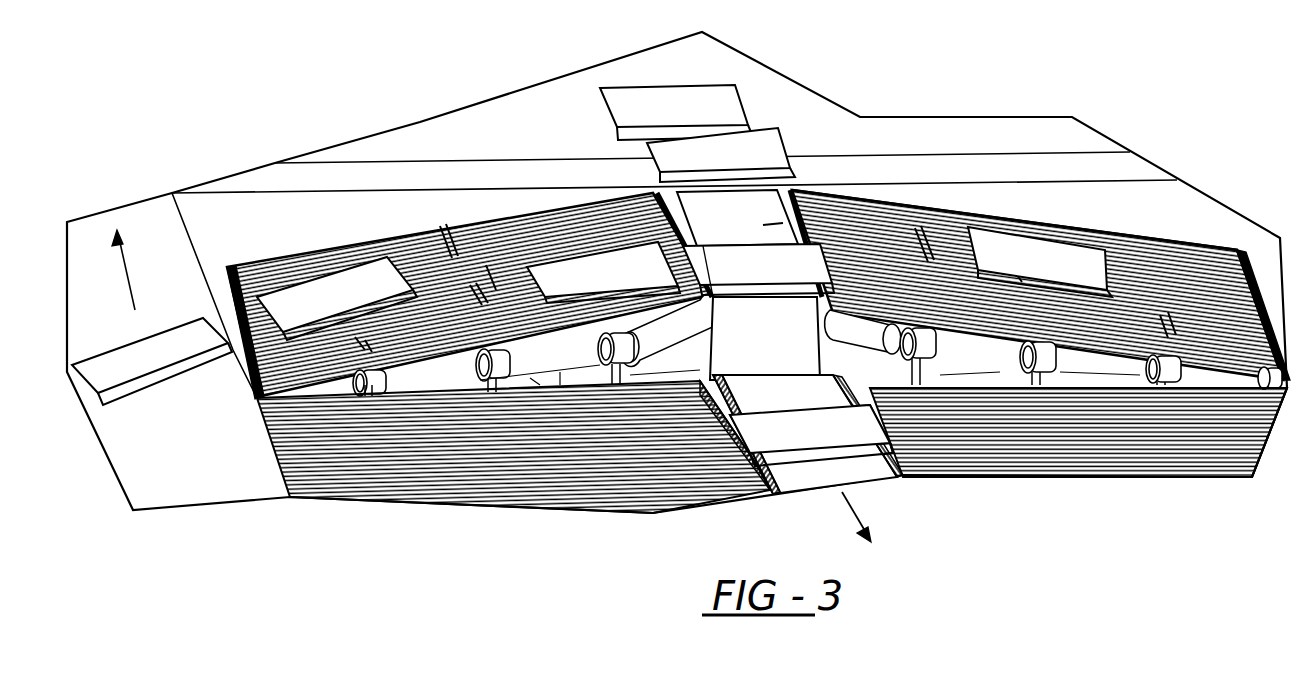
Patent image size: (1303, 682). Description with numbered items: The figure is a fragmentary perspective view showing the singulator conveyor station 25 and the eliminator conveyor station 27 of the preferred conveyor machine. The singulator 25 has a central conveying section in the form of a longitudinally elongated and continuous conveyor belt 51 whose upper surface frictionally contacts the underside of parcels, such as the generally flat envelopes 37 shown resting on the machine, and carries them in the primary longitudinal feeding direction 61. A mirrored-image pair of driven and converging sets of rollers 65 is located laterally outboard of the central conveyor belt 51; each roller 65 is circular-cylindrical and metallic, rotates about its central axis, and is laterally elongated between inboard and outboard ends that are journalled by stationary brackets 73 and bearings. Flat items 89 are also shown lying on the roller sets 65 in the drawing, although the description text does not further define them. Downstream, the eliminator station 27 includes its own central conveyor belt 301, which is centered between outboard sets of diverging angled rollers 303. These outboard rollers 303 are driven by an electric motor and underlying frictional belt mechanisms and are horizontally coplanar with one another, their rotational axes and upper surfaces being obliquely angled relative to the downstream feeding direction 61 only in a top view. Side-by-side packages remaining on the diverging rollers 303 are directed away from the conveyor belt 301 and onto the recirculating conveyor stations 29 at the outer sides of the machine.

The singulator conveyor station 25 is at (1175, 267).
The eliminator conveyor station 27 is at (1180, 430).
The recirculating conveyor station 29 is at (200, 470).
The envelope 37 is at (657, 103).
The central conveyor belt 51 is at (813, 213).
The feeding direction 61 is at (858, 510).
The converging rollers 65 is at (503, 238).
The stationary bracket 73 is at (938, 380).
The article tray 89 is at (335, 342).
The central conveyor belt 301 is at (807, 477).
The diverging angled rollers 303 is at (437, 455).